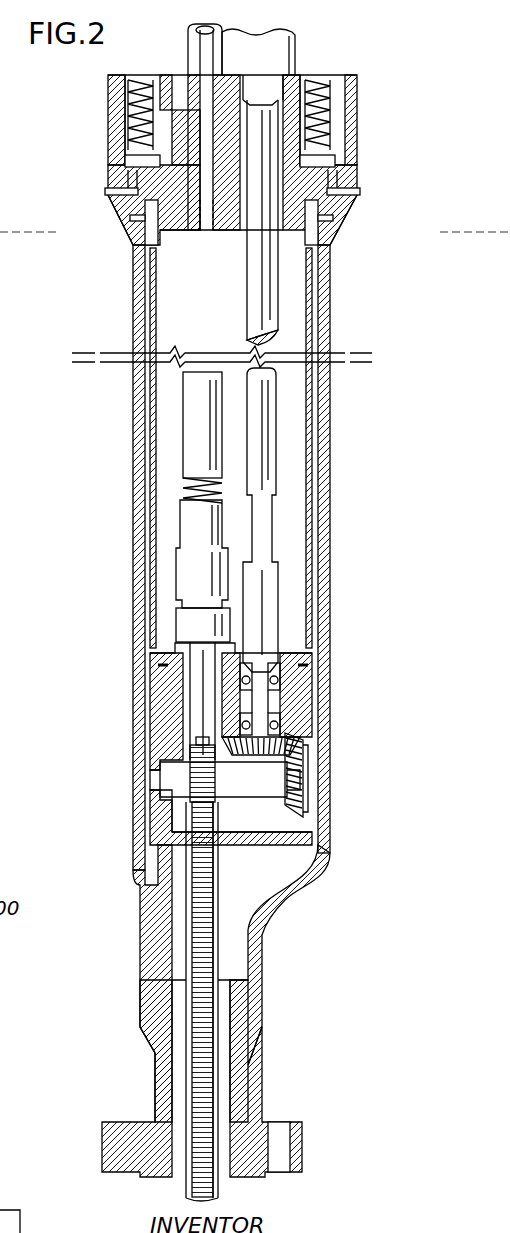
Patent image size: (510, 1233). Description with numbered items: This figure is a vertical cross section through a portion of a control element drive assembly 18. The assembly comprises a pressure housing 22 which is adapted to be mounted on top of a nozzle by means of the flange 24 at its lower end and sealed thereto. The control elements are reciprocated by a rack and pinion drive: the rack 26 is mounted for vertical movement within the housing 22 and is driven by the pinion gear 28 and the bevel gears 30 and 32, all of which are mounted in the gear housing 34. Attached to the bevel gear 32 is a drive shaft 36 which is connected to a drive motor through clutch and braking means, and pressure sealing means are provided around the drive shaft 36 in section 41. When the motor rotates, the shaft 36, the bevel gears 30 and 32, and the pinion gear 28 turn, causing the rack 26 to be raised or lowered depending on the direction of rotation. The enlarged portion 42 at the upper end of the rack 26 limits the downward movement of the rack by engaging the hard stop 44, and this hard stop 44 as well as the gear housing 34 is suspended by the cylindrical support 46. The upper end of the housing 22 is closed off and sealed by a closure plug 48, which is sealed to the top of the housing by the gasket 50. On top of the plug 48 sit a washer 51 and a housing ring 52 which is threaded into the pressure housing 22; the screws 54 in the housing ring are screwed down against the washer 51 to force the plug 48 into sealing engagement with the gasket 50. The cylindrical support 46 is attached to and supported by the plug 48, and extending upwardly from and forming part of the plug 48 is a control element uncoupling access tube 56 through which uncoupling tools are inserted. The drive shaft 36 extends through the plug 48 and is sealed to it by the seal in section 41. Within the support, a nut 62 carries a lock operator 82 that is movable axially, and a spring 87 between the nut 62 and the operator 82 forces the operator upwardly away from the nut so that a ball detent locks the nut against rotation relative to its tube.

The section 41 is at (283, 53).
The control element uncoupling access tube 56 is at (196, 40).
The housing ring 52 is at (160, 88).
The screws 54 is at (147, 98).
The washer 51 is at (150, 168).
The closure plug 48 is at (155, 180).
The gasket 50 is at (128, 212).
The pressure housing 22 is at (137, 280).
The cylindrical support 46 is at (155, 305).
The drive shaft 36 is at (265, 302).
The lock operator 82 is at (197, 438).
The drive assembly 18 is at (361, 511).
The spring 87 is at (190, 487).
The nut 62 is at (190, 530).
The enlarged portion 42 is at (190, 624).
The hard stop 44 is at (172, 646).
The gear housing 34 is at (160, 707).
The bevel gear 32 is at (305, 730).
The pinion gear 28 is at (200, 772).
The bevel gear 30 is at (290, 764).
The rack 26 is at (200, 896).
The flange 24 is at (252, 1130).